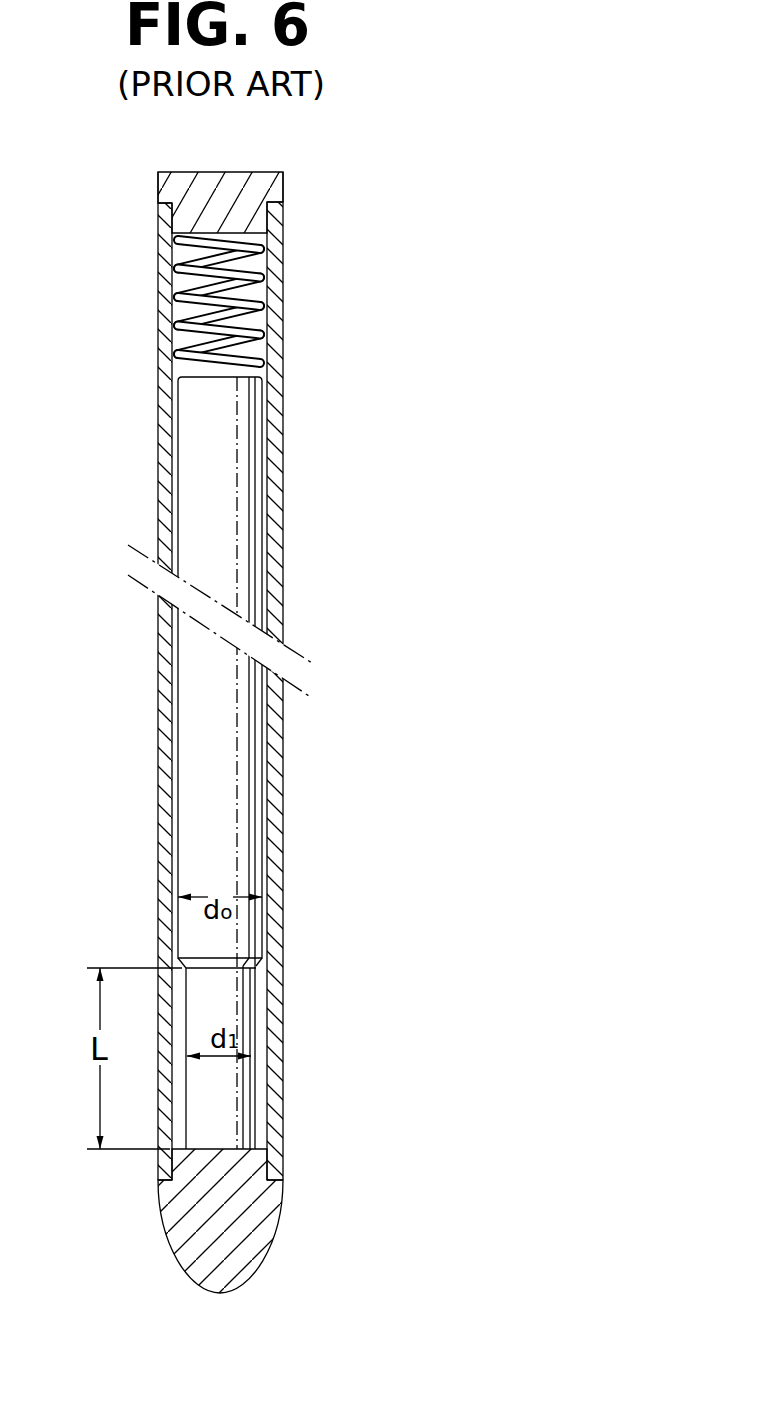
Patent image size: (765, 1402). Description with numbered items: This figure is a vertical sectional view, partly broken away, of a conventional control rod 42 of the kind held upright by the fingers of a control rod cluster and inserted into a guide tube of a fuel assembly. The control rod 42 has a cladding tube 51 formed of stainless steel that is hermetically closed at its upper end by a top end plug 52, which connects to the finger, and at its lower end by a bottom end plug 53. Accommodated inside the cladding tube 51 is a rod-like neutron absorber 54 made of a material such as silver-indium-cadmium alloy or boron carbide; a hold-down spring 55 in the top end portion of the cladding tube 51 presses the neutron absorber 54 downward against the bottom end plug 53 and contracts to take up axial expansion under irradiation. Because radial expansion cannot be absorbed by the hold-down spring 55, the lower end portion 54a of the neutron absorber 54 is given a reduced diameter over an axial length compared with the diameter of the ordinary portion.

The control rod 42 is at (150, 481).
The cladding tube 51 is at (283, 532).
The top end plug 52 is at (264, 172).
The bottom end plug 53 is at (262, 1227).
The neutron absorber 54 is at (263, 783).
The lower end portion of the neutron absorber 54a is at (245, 1044).
The hold-down spring 55 is at (262, 281).